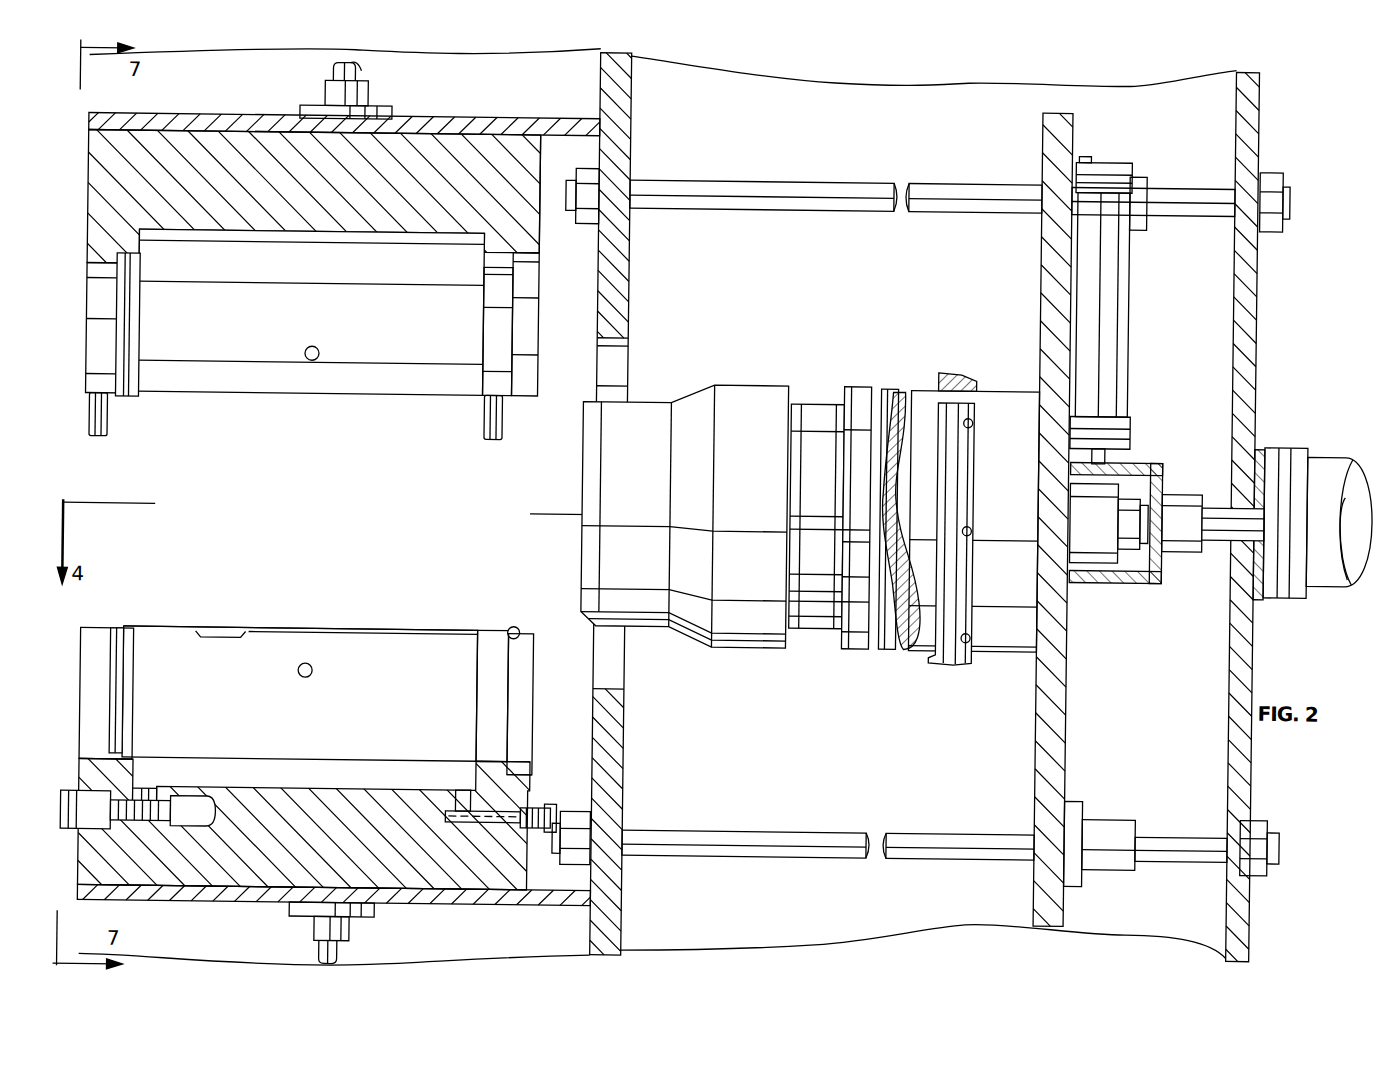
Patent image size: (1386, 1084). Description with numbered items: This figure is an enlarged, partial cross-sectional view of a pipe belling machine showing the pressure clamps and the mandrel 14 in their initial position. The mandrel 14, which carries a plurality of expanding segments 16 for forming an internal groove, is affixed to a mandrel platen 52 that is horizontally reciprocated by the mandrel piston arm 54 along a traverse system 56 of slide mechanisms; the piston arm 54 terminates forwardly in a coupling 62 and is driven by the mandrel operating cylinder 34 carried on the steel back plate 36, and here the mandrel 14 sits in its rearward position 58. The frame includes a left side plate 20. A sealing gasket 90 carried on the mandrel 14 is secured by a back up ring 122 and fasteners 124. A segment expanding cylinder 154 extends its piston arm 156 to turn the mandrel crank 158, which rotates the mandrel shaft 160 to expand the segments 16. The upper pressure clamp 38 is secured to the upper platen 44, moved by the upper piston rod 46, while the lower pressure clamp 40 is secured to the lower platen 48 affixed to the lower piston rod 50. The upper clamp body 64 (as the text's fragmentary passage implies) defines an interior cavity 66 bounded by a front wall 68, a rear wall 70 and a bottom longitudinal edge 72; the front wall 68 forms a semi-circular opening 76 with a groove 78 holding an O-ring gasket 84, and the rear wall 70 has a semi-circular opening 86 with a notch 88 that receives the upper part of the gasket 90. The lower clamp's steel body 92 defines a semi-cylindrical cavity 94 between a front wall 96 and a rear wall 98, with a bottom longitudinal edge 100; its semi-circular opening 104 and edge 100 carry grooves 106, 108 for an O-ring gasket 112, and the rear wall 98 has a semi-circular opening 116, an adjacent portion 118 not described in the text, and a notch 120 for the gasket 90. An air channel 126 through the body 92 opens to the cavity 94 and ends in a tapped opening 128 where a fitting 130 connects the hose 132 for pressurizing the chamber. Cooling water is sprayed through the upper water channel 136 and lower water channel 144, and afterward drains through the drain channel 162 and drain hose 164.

The mandrel 14 is at (730, 386).
The expanding segments 16 is at (850, 386).
The left side plate 20 is at (437, 72).
The mandrel operating cylinder 34 is at (1330, 466).
The back plate 36 is at (1250, 325).
The upper pressure clamp 38 is at (176, 142).
The lower pressure clamp 40 is at (197, 866).
The upper platen 44 is at (512, 118).
The upper piston rod 46 is at (355, 70).
The lower platen 48 is at (455, 907).
The lower piston rod 50 is at (345, 945).
The mandrel platen 52 is at (1060, 745).
The mandrel piston arm 54 is at (1216, 508).
The traverse system 56 is at (776, 183).
The rearward position 58 is at (823, 378).
The coupling 62 is at (1185, 495).
The upper cavity 64 is at (244, 136).
The cavity 66 is at (381, 379).
The front wall 68 is at (95, 352).
The rear wall 70 is at (540, 238).
The left bottom longitudinal edge 72 is at (312, 398).
The semi-circular opening 76 is at (97, 308).
The groove 78 is at (120, 375).
The O-ring gasket 84 is at (140, 278).
The semi-circular opening 86 is at (536, 296).
The semi-circular notch 88 is at (524, 326).
The sealing gasket 90 is at (950, 372).
The steel body 92 is at (410, 893).
The semi-cylindrical cavity 94 is at (405, 648).
The front wall 96 is at (92, 680).
The rear wall 98 is at (536, 724).
The left bottom longitudinal edge 100 is at (272, 633).
The semi-circular opening 104 is at (86, 678).
The groove 106 is at (120, 720).
The groove 108 is at (204, 634).
The O-ring gasket 112 is at (118, 633).
The semi-circular opening 116 is at (520, 693).
The flange step 118 is at (527, 743).
The semi-circular notch 120 is at (527, 760).
The back up ring 122 is at (966, 470).
The fasteners 124 is at (971, 421).
The air channel 126 is at (462, 792).
The tapped opening 128 is at (535, 830).
The fitting 130 is at (520, 826).
The flexible hose 132 is at (552, 812).
The upper water channel 136 is at (316, 353).
The lower water channel 144 is at (313, 675).
The segment expanding cylinder 154 is at (1125, 320).
The piston arm 156 is at (1105, 455).
The mandrel crank 158 is at (1095, 560).
The mandrel shaft 160 is at (1130, 545).
The drain channel 162 is at (150, 795).
The drain hose 164 is at (65, 802).